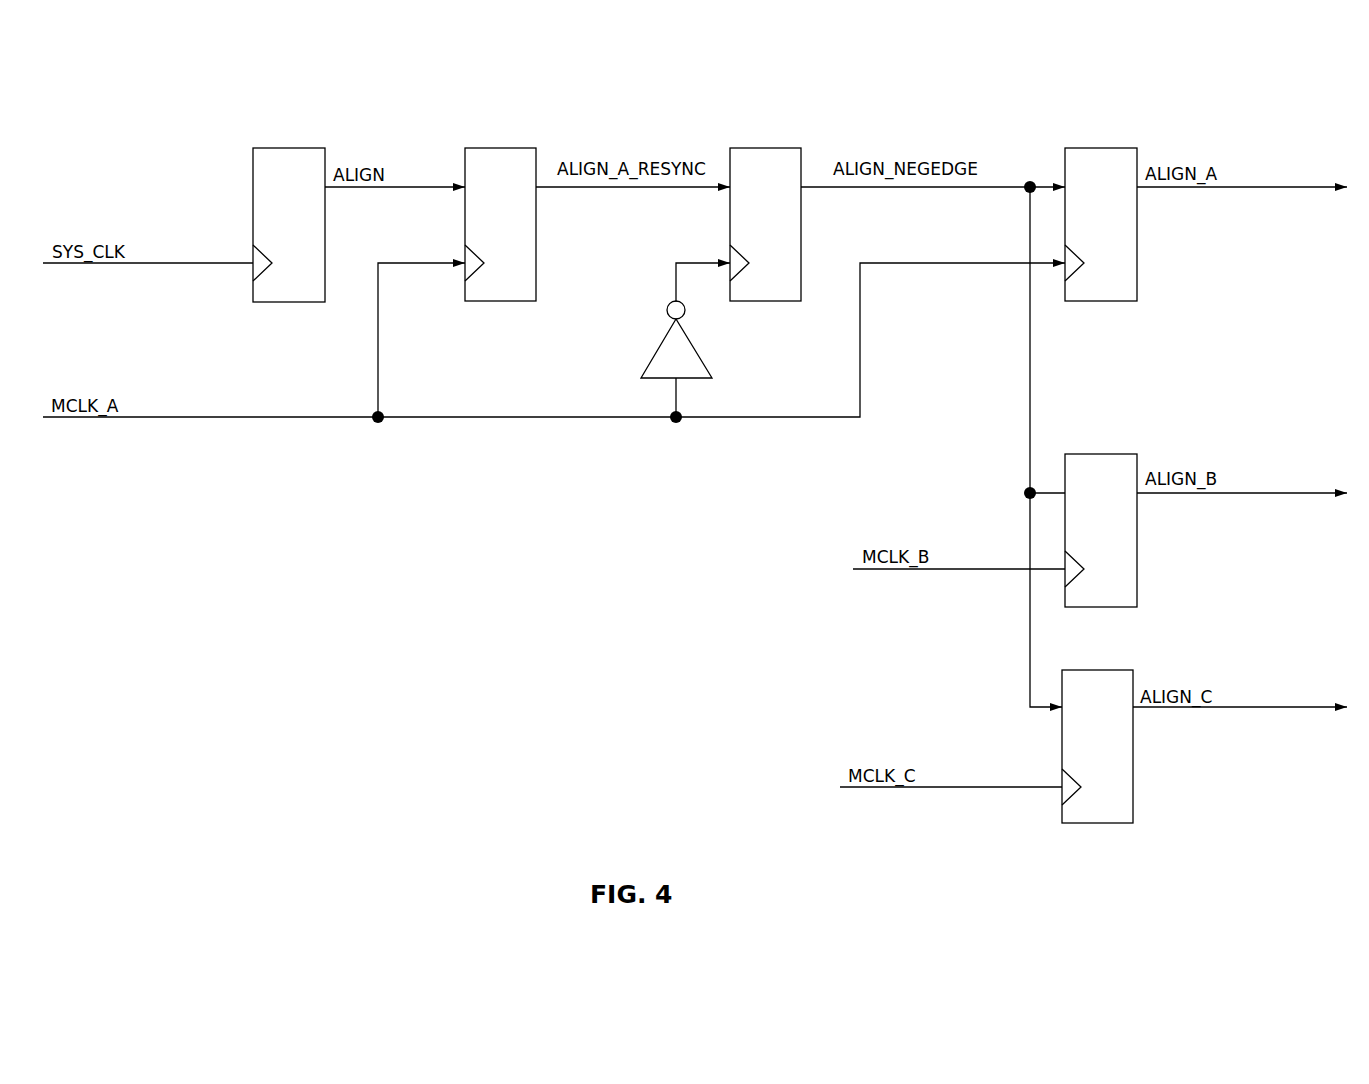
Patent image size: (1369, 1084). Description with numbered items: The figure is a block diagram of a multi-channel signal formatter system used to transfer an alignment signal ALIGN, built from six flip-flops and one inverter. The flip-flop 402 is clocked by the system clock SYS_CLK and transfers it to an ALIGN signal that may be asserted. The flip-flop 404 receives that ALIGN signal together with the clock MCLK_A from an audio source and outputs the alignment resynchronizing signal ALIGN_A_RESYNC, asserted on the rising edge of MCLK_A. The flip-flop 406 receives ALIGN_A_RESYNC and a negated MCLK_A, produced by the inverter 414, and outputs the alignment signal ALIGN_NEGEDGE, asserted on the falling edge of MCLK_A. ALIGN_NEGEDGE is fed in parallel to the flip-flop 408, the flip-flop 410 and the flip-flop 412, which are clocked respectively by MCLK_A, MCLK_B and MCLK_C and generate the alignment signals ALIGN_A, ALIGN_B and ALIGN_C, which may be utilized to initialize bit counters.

The flip-flop 402 is at (295, 148).
The flip-flop 404 is at (508, 148).
The flip-flop 406 is at (772, 148).
The flip-flop 408 is at (1093, 148).
The flip-flop 410 is at (1112, 454).
The flip-flop 412 is at (1133, 670).
The inverter 414 is at (702, 378).